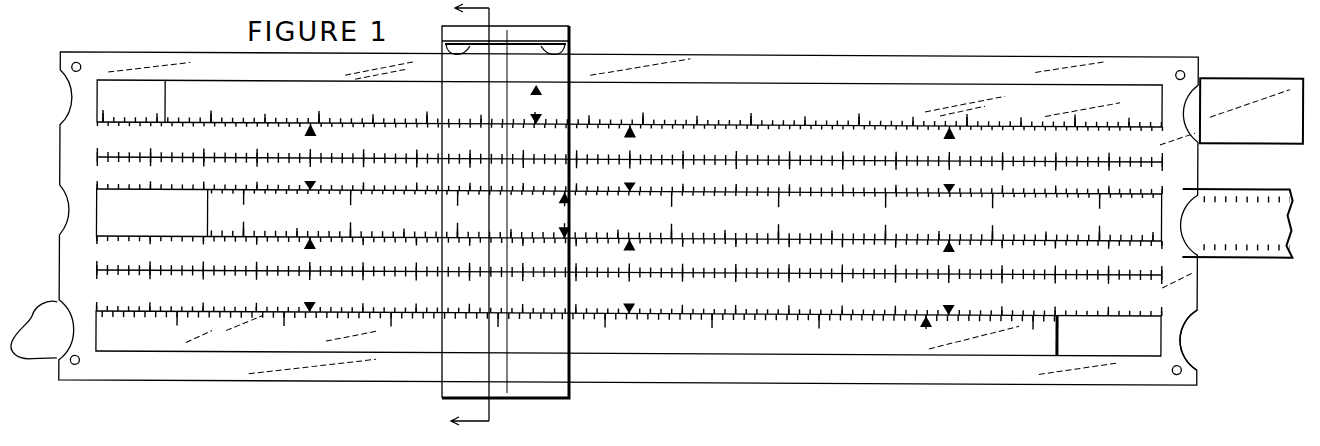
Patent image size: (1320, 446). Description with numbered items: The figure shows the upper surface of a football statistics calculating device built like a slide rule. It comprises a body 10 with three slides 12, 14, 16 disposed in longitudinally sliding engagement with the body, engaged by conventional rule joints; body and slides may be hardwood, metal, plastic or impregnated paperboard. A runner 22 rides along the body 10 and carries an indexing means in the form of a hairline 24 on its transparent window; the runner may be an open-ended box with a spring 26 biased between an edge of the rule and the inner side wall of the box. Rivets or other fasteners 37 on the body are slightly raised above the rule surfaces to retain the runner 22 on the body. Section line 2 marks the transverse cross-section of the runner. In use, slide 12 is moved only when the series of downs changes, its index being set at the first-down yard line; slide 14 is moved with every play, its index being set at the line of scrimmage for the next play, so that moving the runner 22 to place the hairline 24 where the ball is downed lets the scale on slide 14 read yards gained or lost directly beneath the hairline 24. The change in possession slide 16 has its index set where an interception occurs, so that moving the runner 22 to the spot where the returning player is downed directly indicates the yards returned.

The section line 2- 2 is at (462, 217).
The body 10 is at (657, 219).
The slide 12 is at (967, 102).
The slide 14 is at (1232, 253).
The change in possession slide 16 is at (1005, 347).
The runner 22 is at (567, 26).
The hairline 24 is at (507, 33).
The spring 26 is at (567, 47).
The rivets or other fasteners 37 is at (1198, 362).